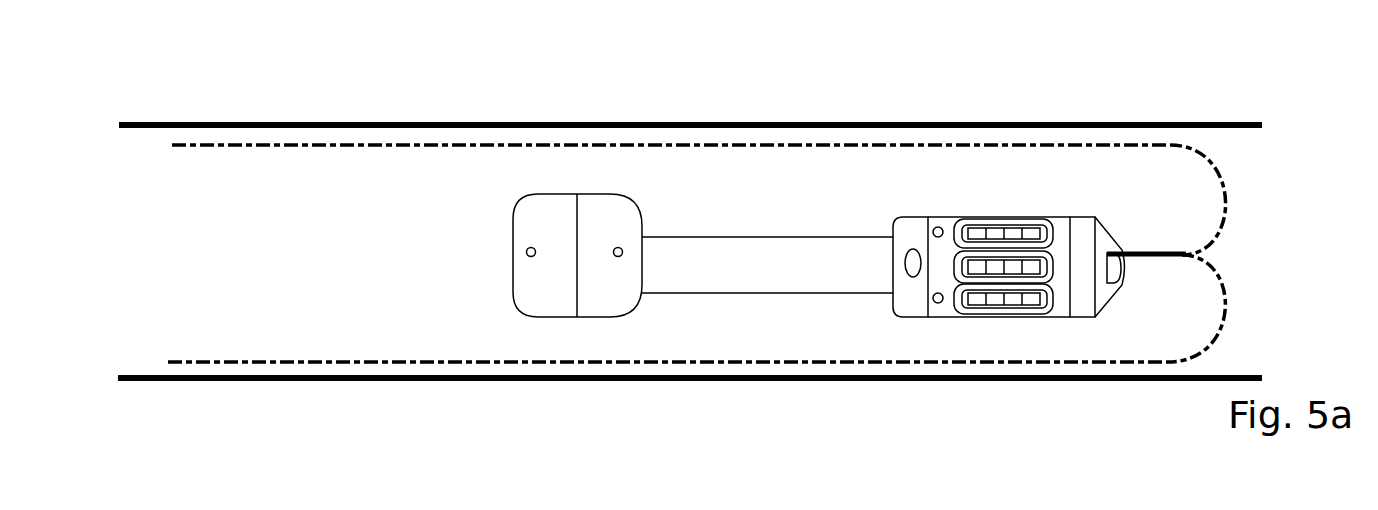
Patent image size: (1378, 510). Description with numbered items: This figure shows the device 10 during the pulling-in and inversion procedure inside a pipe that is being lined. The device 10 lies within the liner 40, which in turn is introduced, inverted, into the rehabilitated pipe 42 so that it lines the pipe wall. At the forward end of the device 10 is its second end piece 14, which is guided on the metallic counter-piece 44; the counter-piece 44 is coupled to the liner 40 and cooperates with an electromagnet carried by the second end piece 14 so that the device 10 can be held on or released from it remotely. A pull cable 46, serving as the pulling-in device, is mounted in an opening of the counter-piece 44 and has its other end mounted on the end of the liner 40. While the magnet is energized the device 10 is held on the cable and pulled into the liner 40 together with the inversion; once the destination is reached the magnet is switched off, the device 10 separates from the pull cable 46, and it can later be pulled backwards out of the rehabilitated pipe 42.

The device 10 is at (1003, 222).
The second end piece 14 is at (1062, 223).
The liner 40 is at (1079, 145).
The rehabilitated pipe 42 is at (1145, 122).
The metallic counter-piece 44 is at (1083, 305).
The pull cable 46 is at (1155, 257).